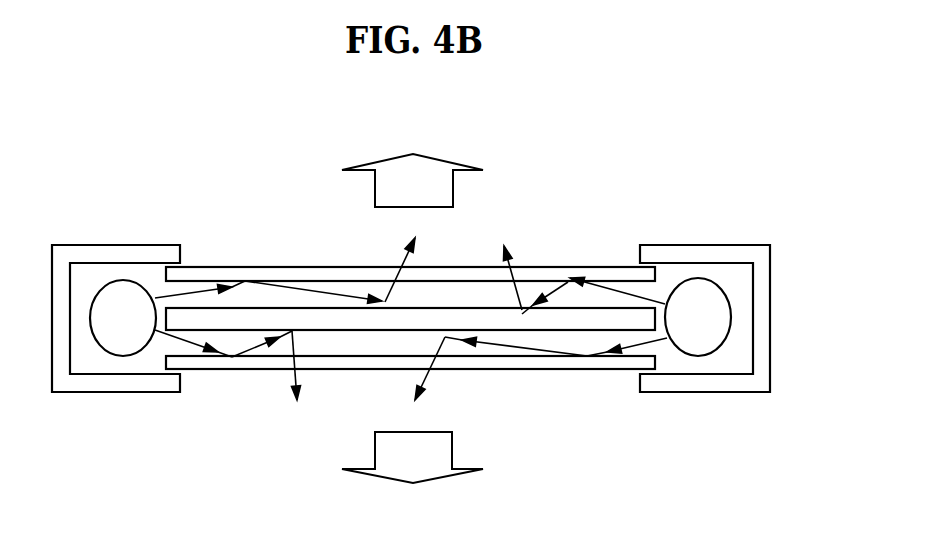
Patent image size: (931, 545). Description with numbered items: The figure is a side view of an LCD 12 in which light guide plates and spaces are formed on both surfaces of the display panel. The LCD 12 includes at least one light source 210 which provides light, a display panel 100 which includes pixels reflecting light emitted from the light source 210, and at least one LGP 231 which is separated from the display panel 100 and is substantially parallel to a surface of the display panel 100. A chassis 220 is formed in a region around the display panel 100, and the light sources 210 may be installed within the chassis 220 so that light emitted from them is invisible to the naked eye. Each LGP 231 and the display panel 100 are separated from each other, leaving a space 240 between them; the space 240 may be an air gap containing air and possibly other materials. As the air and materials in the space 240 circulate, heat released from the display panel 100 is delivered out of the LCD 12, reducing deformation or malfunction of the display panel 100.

The LCD 12 is at (695, 170).
The display panel 100 is at (558, 317).
The light source 210 is at (135, 292).
The chassis 220 is at (90, 259).
The LGP 231 is at (245, 281).
The space 240 is at (479, 291).